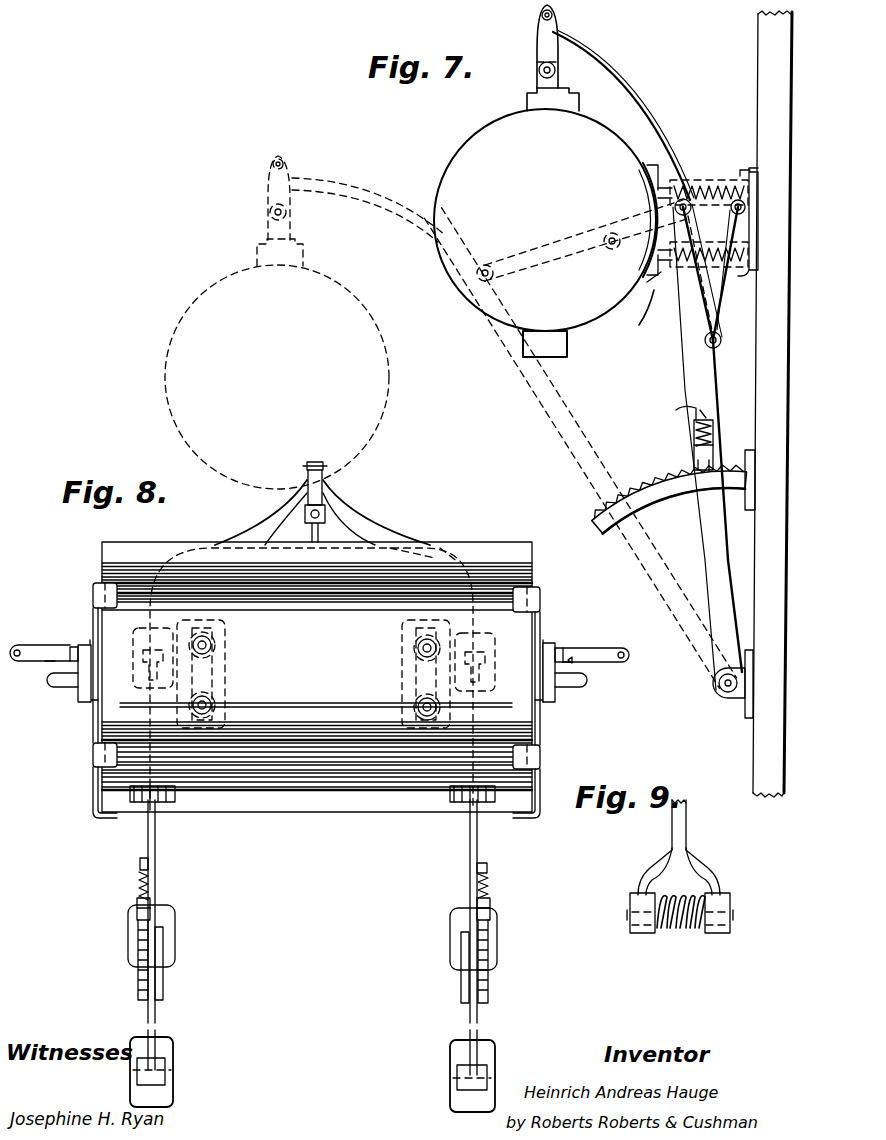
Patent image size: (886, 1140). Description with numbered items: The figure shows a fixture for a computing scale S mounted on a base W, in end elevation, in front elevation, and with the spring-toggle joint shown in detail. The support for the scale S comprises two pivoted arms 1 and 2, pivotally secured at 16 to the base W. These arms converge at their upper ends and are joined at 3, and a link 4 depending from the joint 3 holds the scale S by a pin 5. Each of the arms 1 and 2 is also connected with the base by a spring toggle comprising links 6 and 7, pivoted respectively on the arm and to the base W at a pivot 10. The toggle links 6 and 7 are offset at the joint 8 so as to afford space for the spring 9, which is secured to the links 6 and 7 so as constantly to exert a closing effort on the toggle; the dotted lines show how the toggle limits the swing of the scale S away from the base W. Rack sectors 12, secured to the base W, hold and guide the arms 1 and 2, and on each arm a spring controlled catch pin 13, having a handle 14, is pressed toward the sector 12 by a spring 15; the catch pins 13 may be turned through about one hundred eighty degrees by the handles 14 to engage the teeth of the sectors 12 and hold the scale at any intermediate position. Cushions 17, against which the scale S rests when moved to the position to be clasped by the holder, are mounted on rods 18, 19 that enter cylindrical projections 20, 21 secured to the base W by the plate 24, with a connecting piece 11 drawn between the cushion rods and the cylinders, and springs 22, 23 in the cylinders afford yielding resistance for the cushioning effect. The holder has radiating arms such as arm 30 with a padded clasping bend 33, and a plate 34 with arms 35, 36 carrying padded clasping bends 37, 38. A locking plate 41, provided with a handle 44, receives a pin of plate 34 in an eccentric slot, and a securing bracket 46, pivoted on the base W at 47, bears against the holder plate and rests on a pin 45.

In FIG. 7, the pivoted arm 1 is at (682, 384).
In FIG. 8, the pivoted arm 1 is at (470, 834).
In FIG. 7, the pivoted arm 2 is at (623, 115).
In FIG. 8, the pivoted arm 2 is at (158, 844).
In FIG. 7, the joint 3 is at (553, 16).
In FIG. 8, the joint 3 is at (328, 468).
In FIG. 7, the link 4 is at (538, 42).
In FIG. 8, the link 4 is at (322, 510).
In FIG. 7, the pin 5 is at (538, 78).
In FIG. 8, the pin 5 is at (325, 518).
In FIG. 7, the toggle link 6 is at (522, 260).
In FIG. 9, the toggle link 6 is at (688, 830).
In FIG. 7, the toggle link 7 is at (610, 236).
In FIG. 9, the toggle link 7 is at (658, 856).
In FIG. 7, the toggle joint 8 is at (608, 250).
In FIG. 8, the toggle joint 8 is at (174, 802).
In FIG. 9, the toggle joint 8 is at (734, 915).
In FIG. 9, the spring 9 is at (678, 934).
In FIG. 7, the pivot 10 is at (746, 207).
In FIG. 7, the connecting piece 11 is at (675, 181).
In FIG. 7, the rack sector 12 is at (678, 498).
In FIG. 8, the rack sector 12 is at (138, 992).
In FIG. 7, the catch pin 13 is at (713, 421).
In FIG. 8, the catch pin 13 is at (138, 876).
In FIG. 7, the handle 14 is at (676, 413).
In FIG. 8, the handle 14 is at (140, 860).
In FIG. 7, the spring 15 is at (694, 444).
In FIG. 8, the spring 15 is at (136, 904).
In FIG. 7, the pivot 16 is at (726, 686).
In FIG. 8, the pivot 16 is at (164, 1072).
In FIG. 7, the cushion 17 is at (646, 173).
In FIG. 8, the cushion 17 is at (226, 664).
In FIG. 7, the rod 18 is at (660, 186).
In FIG. 7, the rod 19 is at (626, 302).
In FIG. 7, the cylindrical projection 20 is at (708, 181).
In FIG. 8, the cylindrical projection 20 is at (216, 642).
In FIG. 7, the cylindrical projection 21 is at (738, 270).
In FIG. 8, the cylindrical projection 21 is at (216, 700).
In FIG. 7, the spring 22 is at (740, 170).
In FIG. 7, the spring 23 is at (668, 272).
In FIG. 7, the plate 24 is at (756, 175).
In FIG. 8, the arm 30 is at (94, 802).
In FIG. 8, the padded clasping bend 33 is at (107, 820).
In FIG. 8, the plate 34 is at (90, 702).
In FIG. 8, the arm 35 is at (98, 610).
In FIG. 8, the arm 36 is at (536, 724).
In FIG. 8, the padded clasping bend 37 is at (96, 588).
In FIG. 8, the padded clasping bend 38 is at (98, 761).
In FIG. 8, the locking plate 41 is at (78, 700).
In FIG. 8, the handle 44 is at (56, 680).
In FIG. 8, the pin 45 is at (48, 664).
In FIG. 8, the securing bracket 46 is at (84, 634).
In FIG. 8, the pivot 47 is at (54, 643).
In FIG. 7, the scale S is at (440, 182).
In FIG. 8, the scale S is at (328, 810).
In FIG. 7, the base W is at (754, 404).